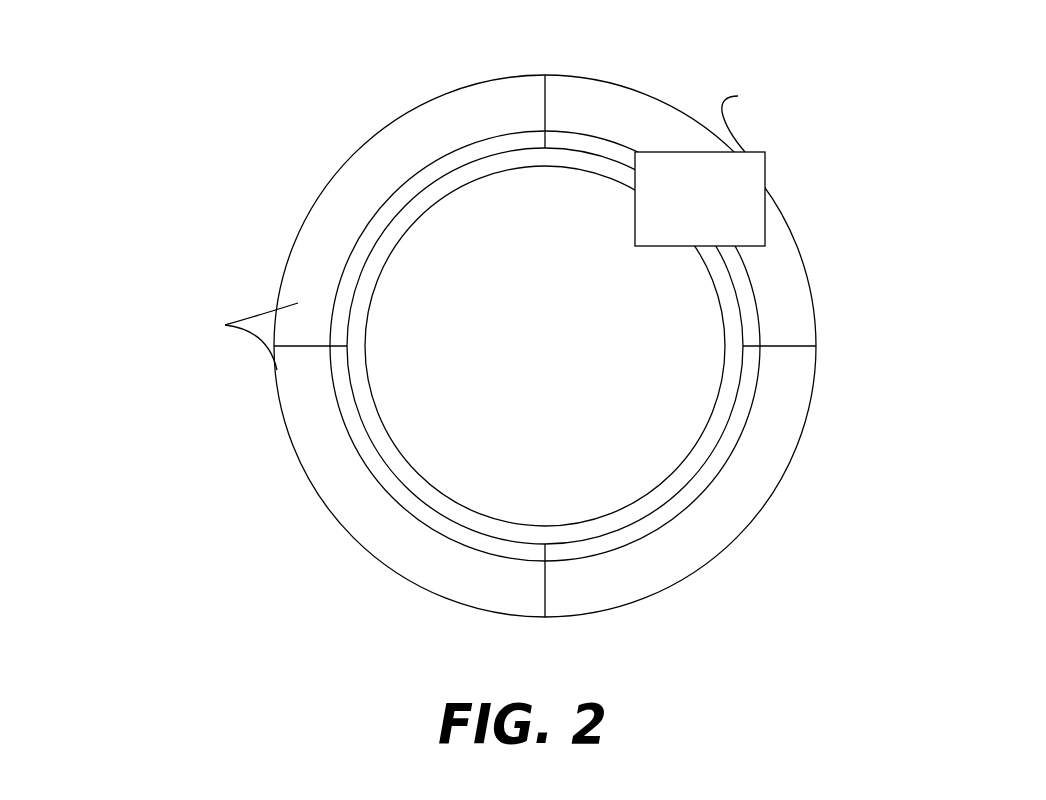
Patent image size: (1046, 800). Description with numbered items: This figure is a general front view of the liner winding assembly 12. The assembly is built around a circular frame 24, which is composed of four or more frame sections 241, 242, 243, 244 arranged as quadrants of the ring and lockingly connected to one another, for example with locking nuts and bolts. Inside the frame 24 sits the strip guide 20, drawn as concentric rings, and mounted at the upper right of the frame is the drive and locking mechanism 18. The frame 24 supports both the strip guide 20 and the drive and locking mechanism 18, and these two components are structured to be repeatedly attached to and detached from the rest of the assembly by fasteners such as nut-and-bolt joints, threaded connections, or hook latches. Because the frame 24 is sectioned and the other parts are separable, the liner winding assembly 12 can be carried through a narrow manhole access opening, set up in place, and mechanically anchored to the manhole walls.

The liner winding assembly 12 is at (545, 348).
The drive and locking mechanism 18 is at (713, 213).
The strip guide 20 is at (405, 228).
The frame 24 is at (444, 346).
The frame section 241 is at (507, 122).
The frame section 242 is at (462, 575).
The frame section 243 is at (628, 120).
The frame section 244 is at (662, 575).